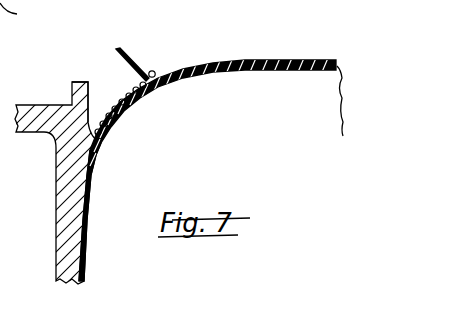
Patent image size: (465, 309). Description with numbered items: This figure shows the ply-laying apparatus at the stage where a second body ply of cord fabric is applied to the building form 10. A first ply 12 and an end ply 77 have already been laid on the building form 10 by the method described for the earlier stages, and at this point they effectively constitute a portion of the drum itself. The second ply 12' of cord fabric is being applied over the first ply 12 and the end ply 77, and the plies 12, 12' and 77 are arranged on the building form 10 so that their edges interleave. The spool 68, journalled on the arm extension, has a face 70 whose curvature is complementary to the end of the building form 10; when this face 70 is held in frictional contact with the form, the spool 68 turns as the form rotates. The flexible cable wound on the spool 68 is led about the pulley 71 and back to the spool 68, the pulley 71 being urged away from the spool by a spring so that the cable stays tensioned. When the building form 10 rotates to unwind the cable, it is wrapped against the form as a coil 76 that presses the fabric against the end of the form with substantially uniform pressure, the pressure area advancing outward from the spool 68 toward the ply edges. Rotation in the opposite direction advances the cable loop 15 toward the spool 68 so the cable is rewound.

The building form 10 is at (345, 80).
The first ply 12 is at (221, 153).
The second ply 12' is at (137, 48).
The cable loop 15 is at (155, 71).
The spool 68 is at (72, 82).
The face 70 is at (78, 222).
The pulley 71 is at (21, 15).
The coil 76 is at (118, 95).
The end ply 77 is at (89, 191).